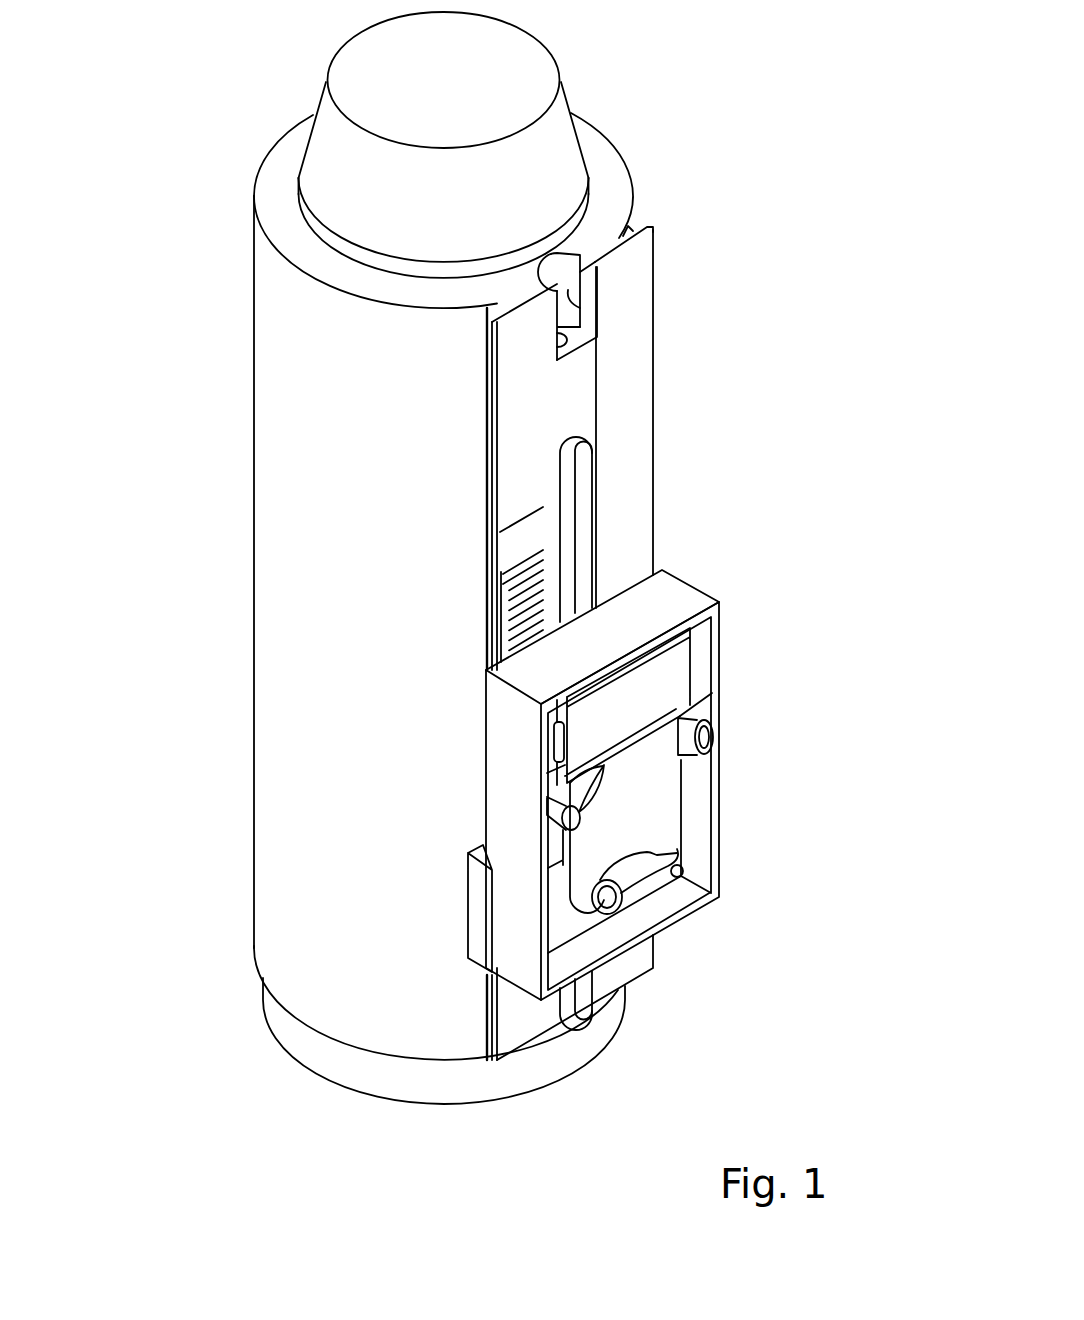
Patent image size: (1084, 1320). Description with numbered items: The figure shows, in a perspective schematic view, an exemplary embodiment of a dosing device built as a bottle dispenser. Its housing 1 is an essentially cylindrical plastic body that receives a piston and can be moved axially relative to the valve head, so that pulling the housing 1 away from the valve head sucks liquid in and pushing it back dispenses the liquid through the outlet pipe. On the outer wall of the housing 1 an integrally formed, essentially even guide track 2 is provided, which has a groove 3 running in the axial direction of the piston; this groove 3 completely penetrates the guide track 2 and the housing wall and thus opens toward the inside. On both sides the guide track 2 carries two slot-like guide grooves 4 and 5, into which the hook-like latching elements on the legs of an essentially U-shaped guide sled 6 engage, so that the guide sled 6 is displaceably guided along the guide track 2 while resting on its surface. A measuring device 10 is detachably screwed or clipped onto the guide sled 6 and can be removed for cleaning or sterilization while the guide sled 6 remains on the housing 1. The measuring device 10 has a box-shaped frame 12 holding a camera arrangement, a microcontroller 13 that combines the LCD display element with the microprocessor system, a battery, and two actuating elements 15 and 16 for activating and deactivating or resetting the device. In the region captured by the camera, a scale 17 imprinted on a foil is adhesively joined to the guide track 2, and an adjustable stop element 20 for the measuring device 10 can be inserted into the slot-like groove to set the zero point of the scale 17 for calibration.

The housing 1 is at (378, 578).
The guide track 2 is at (474, 593).
The groove 3 is at (572, 490).
The guide groove 4 is at (639, 216).
The guide groove 5 is at (484, 308).
The guide sled 6 is at (487, 952).
The measuring device 10 is at (500, 742).
The box-shaped frame 12 is at (668, 598).
The microcontroller 13 is at (658, 692).
The actuating element 15 is at (713, 742).
The actuating element 16 is at (565, 816).
The scale 17 is at (545, 588).
The adjustable stop element 20 is at (568, 290).